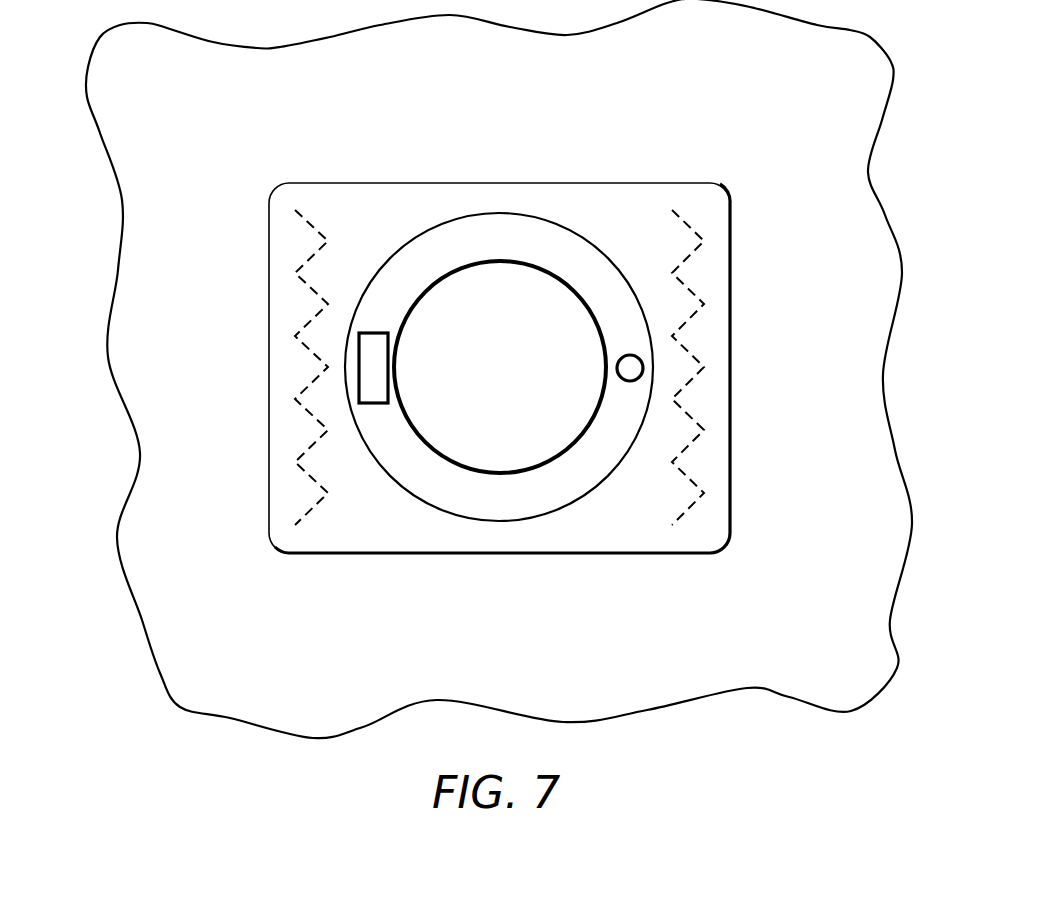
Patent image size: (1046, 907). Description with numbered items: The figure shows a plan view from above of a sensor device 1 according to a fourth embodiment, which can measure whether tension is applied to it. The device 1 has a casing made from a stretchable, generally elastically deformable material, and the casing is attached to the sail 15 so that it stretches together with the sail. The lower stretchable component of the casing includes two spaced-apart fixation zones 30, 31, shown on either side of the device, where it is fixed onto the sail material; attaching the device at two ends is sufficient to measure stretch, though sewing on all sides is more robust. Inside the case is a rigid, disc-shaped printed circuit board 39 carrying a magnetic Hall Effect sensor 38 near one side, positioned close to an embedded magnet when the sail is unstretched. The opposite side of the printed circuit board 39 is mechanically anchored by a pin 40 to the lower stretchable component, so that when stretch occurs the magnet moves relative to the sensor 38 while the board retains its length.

The device 1 is at (681, 156).
The sail 15 is at (750, 675).
The fixation zone 30 is at (297, 457).
The fixation zone 31 is at (700, 432).
The magnetic Hall Effect sensor 38 is at (375, 371).
The printed circuit board 39 is at (499, 504).
The pin 40 is at (617, 368).